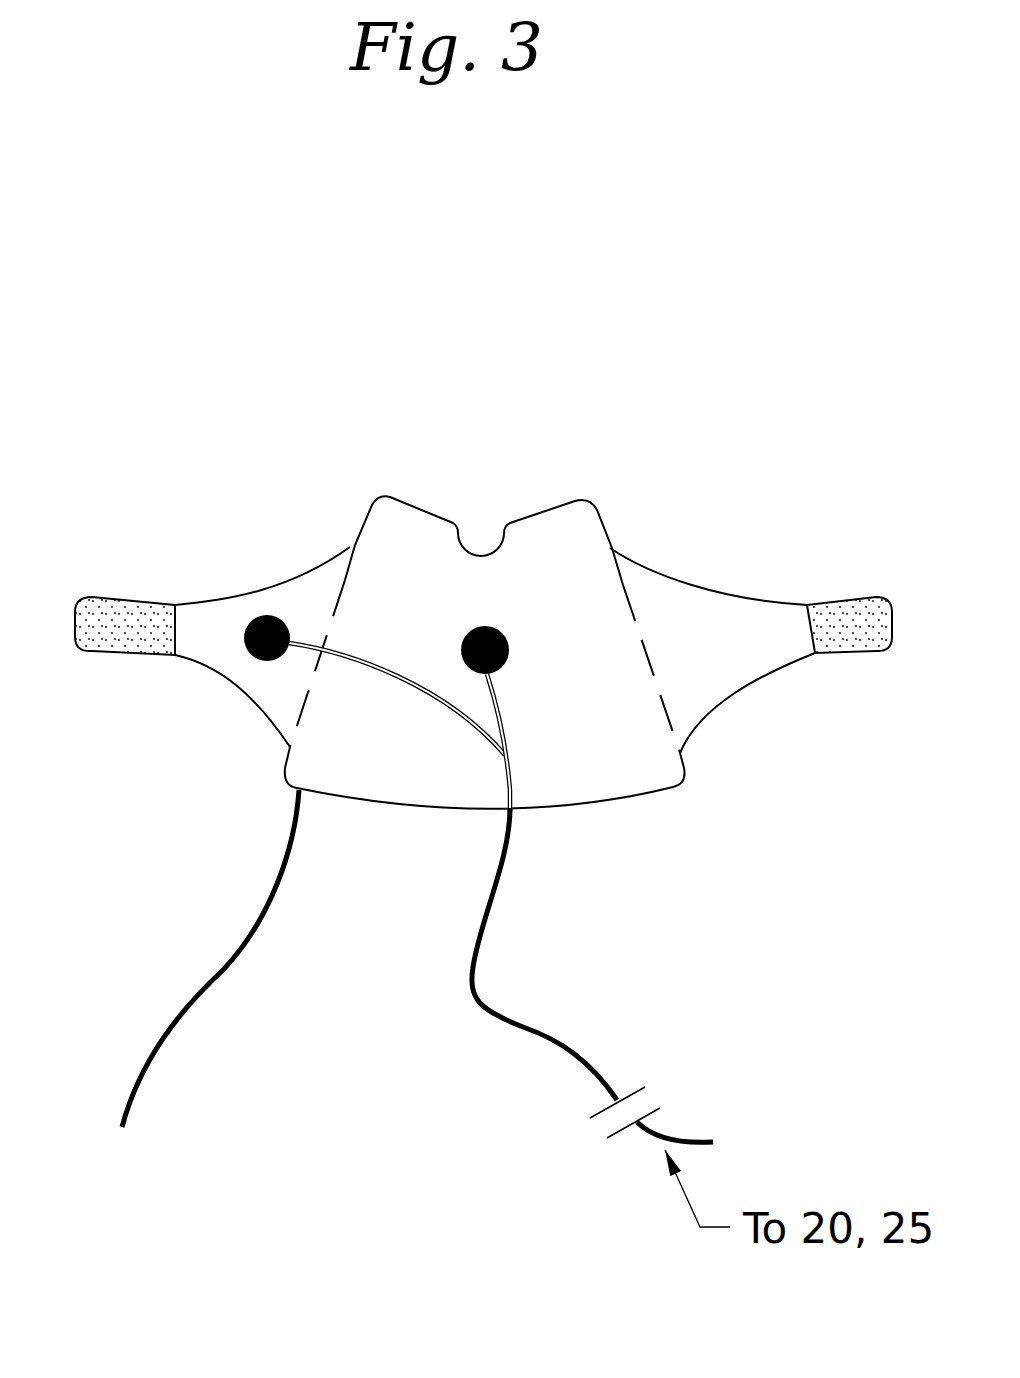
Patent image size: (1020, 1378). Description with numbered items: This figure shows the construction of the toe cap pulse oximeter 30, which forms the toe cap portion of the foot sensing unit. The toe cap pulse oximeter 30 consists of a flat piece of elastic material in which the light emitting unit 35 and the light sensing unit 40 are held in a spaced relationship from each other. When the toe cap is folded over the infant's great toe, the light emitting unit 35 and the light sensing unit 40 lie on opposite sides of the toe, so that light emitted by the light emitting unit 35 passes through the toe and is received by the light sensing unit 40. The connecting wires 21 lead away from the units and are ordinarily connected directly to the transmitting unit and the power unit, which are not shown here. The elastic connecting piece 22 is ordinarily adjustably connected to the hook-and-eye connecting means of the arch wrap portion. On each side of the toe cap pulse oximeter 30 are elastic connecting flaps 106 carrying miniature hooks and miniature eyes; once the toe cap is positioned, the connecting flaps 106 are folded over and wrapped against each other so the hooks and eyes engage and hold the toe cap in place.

The toe cap pulse oximeter 30 is at (495, 554).
The connecting flaps 106 is at (488, 531).
The light sensing unit 40 is at (185, 723).
The light emitting unit 35 is at (633, 752).
The connecting wires 21 is at (596, 975).
The elastic connecting piece 22 is at (243, 981).